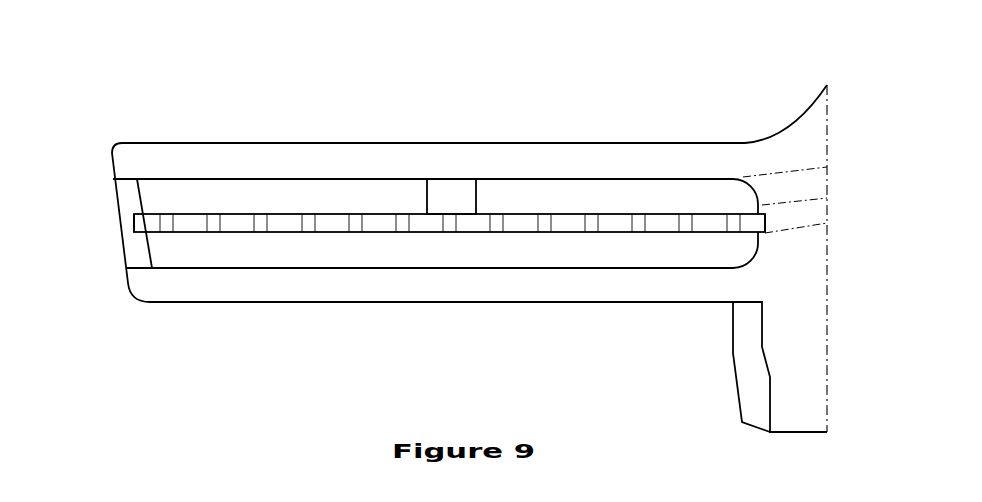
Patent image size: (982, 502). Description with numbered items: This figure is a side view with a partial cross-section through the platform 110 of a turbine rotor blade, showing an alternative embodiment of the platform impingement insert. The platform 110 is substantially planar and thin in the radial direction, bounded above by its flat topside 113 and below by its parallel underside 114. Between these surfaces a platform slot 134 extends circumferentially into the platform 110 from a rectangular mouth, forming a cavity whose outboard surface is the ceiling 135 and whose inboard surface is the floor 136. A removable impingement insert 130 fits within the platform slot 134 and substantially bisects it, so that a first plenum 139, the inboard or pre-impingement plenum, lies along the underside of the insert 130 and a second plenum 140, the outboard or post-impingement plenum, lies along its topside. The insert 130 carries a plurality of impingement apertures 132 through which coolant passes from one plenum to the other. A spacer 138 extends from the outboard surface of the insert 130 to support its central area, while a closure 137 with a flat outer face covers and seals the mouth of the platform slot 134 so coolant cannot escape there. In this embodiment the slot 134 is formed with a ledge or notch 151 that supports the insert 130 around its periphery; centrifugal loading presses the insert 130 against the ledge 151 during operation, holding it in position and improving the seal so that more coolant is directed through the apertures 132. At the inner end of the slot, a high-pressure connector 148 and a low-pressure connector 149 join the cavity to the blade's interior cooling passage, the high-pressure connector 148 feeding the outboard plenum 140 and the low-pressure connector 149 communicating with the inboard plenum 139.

The platform 110 is at (642, 74).
The topside 113 is at (252, 143).
The underside 114 is at (270, 303).
The impingement insert 130 is at (332, 225).
The impingement apertures 132 is at (213, 232).
The platform slot 134 is at (160, 186).
The ceiling 135 is at (327, 182).
The floor 136 is at (443, 267).
The closure 137 is at (135, 243).
The spacer 138 is at (452, 197).
The first plenum 139 is at (683, 250).
The second plenum 140 is at (508, 196).
The high-pressure connector 148 is at (800, 247).
The low-pressure connector 149 is at (803, 183).
The ledge 151 is at (133, 223).